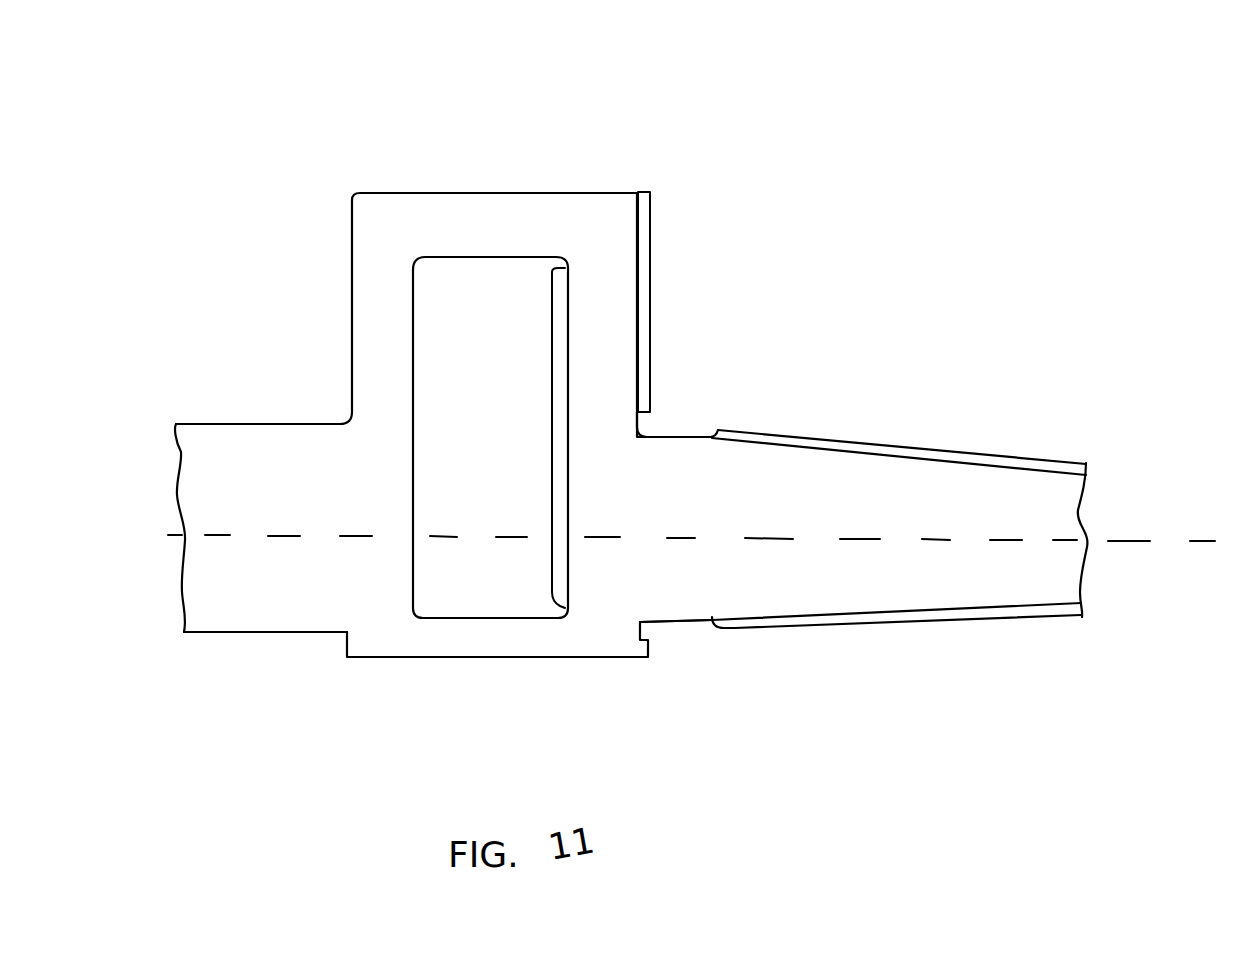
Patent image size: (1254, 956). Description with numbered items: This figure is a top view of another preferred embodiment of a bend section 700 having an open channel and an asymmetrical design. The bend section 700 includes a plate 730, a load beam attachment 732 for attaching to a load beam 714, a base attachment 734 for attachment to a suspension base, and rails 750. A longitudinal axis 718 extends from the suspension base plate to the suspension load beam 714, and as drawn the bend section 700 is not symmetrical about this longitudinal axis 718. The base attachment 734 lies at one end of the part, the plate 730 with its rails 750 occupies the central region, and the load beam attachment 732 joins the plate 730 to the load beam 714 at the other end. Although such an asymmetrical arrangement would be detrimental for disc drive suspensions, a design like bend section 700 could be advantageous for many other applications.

The bend section 700 is at (745, 77).
The plate 730 is at (490, 215).
The rails 750 is at (645, 230).
The load beam attachment 732 is at (657, 473).
The base attachment 734 is at (282, 430).
The load beam 714 is at (906, 480).
The longitudinal axis 718 is at (1128, 540).